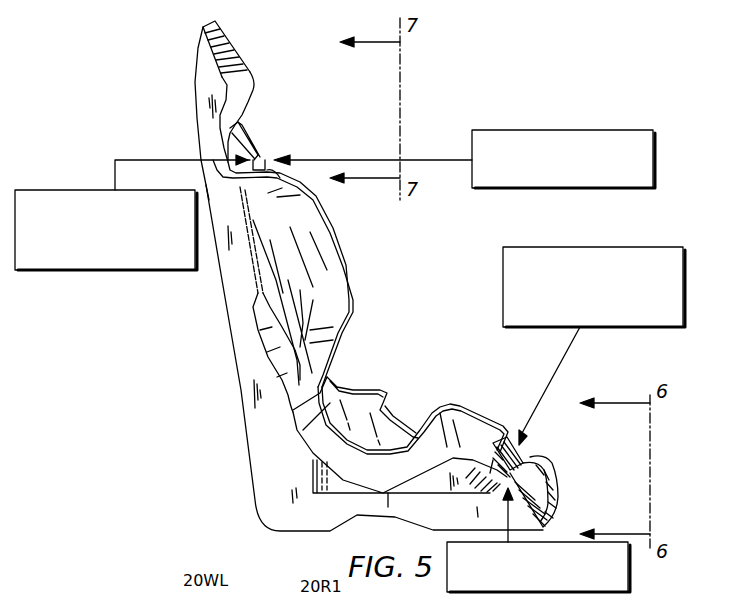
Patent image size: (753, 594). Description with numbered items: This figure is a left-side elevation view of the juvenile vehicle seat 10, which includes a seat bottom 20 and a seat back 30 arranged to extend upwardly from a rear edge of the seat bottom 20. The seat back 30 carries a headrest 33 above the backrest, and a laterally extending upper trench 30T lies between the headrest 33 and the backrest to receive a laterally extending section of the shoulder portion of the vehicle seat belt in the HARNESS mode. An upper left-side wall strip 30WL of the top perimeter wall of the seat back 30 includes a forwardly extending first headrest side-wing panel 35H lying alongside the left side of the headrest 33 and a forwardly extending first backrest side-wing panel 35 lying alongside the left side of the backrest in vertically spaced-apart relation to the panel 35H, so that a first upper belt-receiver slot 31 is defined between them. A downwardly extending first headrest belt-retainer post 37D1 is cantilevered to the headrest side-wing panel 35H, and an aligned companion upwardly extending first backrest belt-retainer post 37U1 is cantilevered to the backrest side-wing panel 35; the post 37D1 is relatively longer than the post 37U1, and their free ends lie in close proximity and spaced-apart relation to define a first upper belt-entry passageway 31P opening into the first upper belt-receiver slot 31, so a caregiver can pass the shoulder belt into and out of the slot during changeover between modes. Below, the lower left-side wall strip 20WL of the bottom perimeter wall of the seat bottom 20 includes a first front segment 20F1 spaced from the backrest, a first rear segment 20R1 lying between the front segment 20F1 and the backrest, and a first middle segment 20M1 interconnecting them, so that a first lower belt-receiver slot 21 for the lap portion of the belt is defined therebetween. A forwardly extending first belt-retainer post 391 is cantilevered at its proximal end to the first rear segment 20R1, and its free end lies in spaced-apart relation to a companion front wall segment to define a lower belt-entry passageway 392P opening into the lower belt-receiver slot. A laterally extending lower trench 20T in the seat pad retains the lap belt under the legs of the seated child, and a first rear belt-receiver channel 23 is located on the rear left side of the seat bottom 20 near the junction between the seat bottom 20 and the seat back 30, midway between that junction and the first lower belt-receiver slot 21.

The juvenile vehicle seat 10 is at (186, 69).
The headrest 33 is at (237, 43).
The forwardly extending first headrest side-wing panel 35H is at (238, 72).
The upper trench 30T is at (248, 130).
The downwardly extending first headrest belt-retainer post 37D1 is at (256, 137).
The seat back 30 is at (343, 246).
The forwardly extending first backrest side-wing panel 35 is at (338, 277).
The upwardly extending first backrest belt-retainer post 37U1 is at (290, 206).
The upper left-side wall strip 30WL is at (252, 196).
The first upper belt-receiver slot 31 is at (45, 190).
The first upper belt-entry passageway 31P is at (553, 130).
The first rear belt-receiver channel 23 is at (404, 413).
The lower left-side wall strip 20WL is at (352, 466).
The forwardly extending first belt-retainer post 391 is at (505, 470).
The seat bottom 20 is at (562, 469).
The first front segment 20F1 is at (557, 487).
The first middle segment 20M1 is at (527, 453).
The first rear segment 20R1 is at (483, 423).
The lower trench 20T is at (511, 443).
The first lower belt-receiver slot 21 is at (575, 247).
The lower belt-entry passageway 392P is at (630, 575).